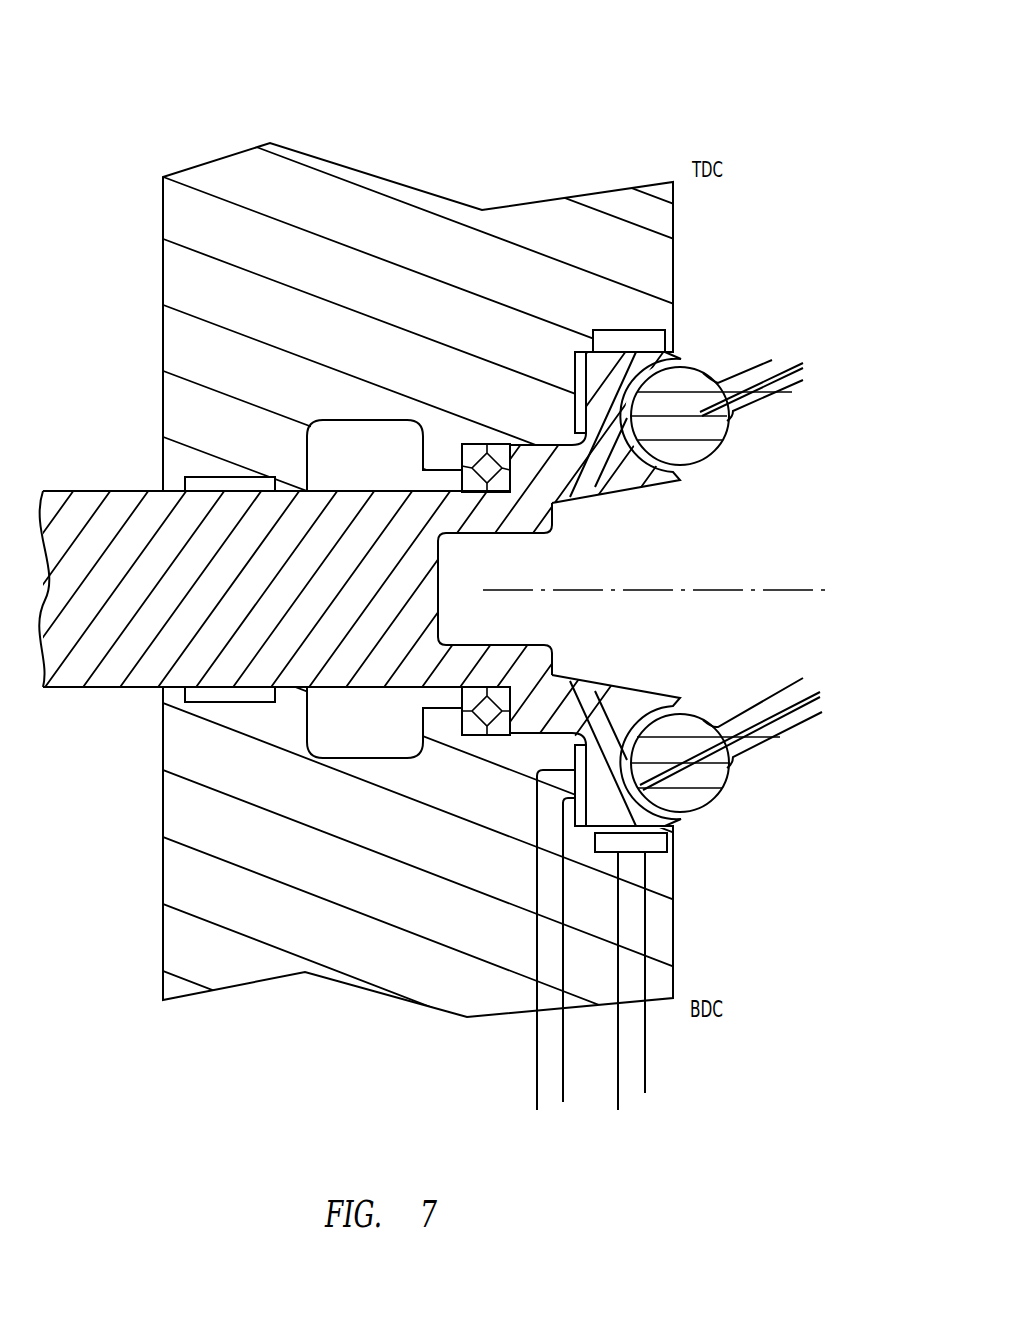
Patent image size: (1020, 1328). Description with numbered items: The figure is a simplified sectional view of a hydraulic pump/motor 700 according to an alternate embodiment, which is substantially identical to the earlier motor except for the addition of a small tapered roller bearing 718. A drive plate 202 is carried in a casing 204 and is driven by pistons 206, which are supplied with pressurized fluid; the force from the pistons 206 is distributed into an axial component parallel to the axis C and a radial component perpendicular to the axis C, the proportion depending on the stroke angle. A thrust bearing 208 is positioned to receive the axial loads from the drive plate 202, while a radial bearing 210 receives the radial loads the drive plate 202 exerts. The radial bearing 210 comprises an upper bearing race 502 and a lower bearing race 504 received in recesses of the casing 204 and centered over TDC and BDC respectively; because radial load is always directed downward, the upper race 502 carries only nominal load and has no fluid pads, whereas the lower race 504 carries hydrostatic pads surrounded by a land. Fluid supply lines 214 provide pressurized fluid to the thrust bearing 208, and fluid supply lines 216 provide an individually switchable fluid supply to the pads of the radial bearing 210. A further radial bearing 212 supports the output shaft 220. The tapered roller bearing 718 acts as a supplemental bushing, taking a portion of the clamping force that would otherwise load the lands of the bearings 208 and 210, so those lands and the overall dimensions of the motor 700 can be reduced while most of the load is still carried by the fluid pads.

The motor 700 is at (126, 57).
The casing 204 is at (228, 170).
The upper bearing race 502 is at (625, 337).
The drive plate 202 is at (680, 356).
The output shaft 220 is at (113, 502).
The tapered roller bearing 718 is at (470, 484).
The pistons 206 is at (708, 423).
The thrust bearing 208 is at (610, 705).
The radial bearing 212 is at (212, 697).
The lower bearing race 504 is at (652, 842).
The radial bearing 210 is at (630, 860).
The fluid supply lines 214 is at (537, 1035).
The fluid supply lines 216 is at (618, 1068).
The axis C is at (657, 590).